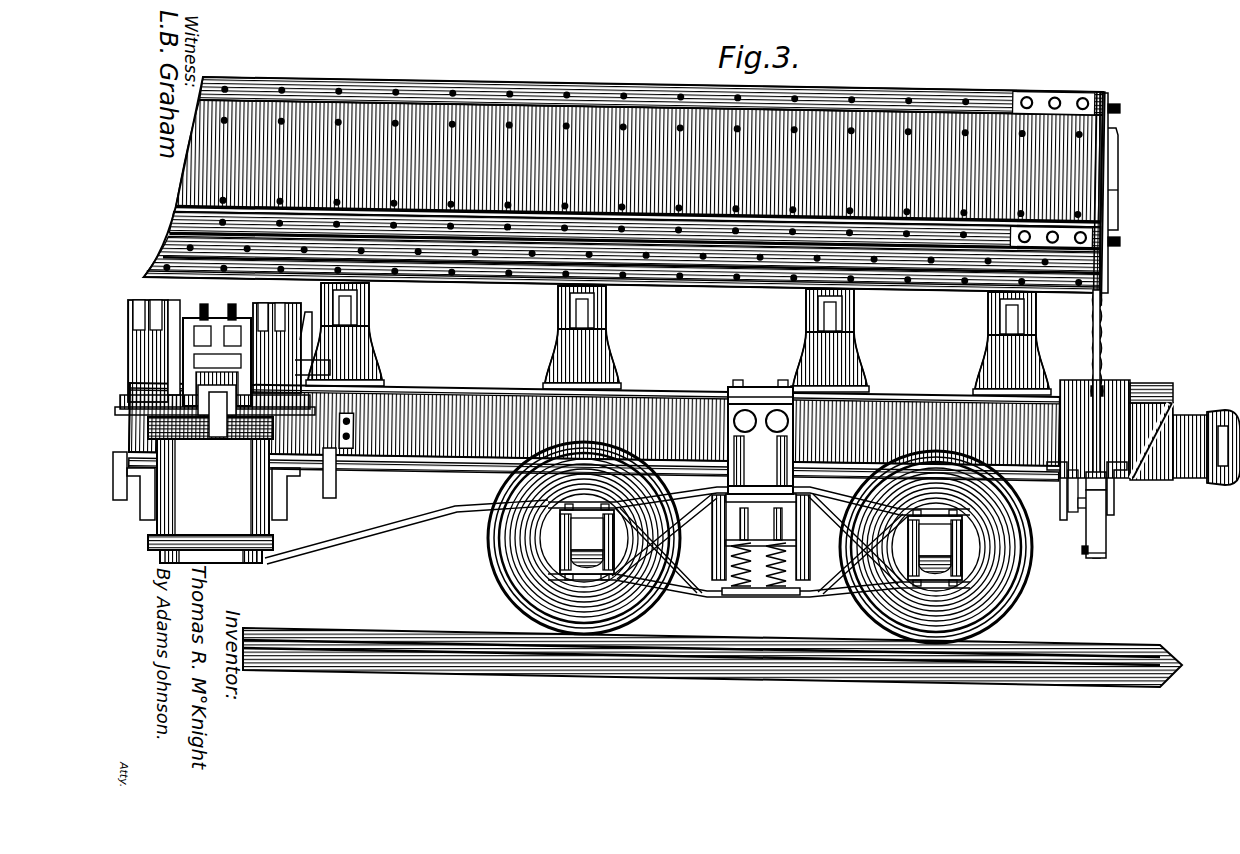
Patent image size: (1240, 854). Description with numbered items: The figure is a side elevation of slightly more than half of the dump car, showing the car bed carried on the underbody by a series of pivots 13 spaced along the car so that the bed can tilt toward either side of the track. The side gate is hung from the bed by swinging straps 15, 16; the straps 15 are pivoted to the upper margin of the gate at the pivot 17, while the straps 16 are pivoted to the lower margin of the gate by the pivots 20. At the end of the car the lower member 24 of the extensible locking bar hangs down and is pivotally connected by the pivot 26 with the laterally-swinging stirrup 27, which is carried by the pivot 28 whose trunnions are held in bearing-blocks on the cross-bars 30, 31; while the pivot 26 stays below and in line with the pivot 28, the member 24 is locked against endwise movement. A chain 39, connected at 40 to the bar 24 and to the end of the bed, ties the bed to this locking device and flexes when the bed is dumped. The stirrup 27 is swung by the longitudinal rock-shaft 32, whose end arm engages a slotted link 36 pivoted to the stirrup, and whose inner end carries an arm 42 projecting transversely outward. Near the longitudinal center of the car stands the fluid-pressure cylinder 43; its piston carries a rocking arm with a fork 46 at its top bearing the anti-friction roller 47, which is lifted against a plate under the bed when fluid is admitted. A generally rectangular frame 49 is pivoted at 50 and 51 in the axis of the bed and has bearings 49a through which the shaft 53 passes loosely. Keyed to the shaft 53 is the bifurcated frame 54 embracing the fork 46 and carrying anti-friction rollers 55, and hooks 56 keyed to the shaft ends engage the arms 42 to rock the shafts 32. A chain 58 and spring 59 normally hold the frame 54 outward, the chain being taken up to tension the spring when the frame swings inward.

The pivots 13 is at (557, 315).
The straps 15 is at (1105, 100).
The straps 16 is at (1118, 180).
The pivot 17 is at (1122, 110).
The pivots 20 is at (1110, 238).
The lower member 24 is at (1100, 440).
The pivot 26 is at (1082, 552).
The stirrup 27 is at (1103, 545).
The pivot 28 is at (1055, 490).
The cross-bar 30 is at (1072, 512).
The cross-bar 31 is at (1104, 530).
The rock-shaft 32 is at (418, 467).
The link 36 is at (1080, 528).
The chain 39 is at (1103, 316).
The connection 40 is at (1104, 384).
The arms 42 is at (128, 468).
The fluid-pressure cylinders 43 is at (268, 562).
The fork 46 is at (218, 410).
The anti-friction roller 47 is at (232, 400).
The frame 49 is at (148, 303).
The bearings 49a is at (303, 394).
The pivot 50 is at (175, 306).
The pivot 51 is at (262, 310).
The shaft 53 is at (208, 392).
The bifurcated frame 54 is at (219, 322).
The anti-friction rollers 55 is at (238, 322).
The hooks 56 is at (118, 490).
The flexible connection 58 is at (303, 366).
The spring 59 is at (305, 346).